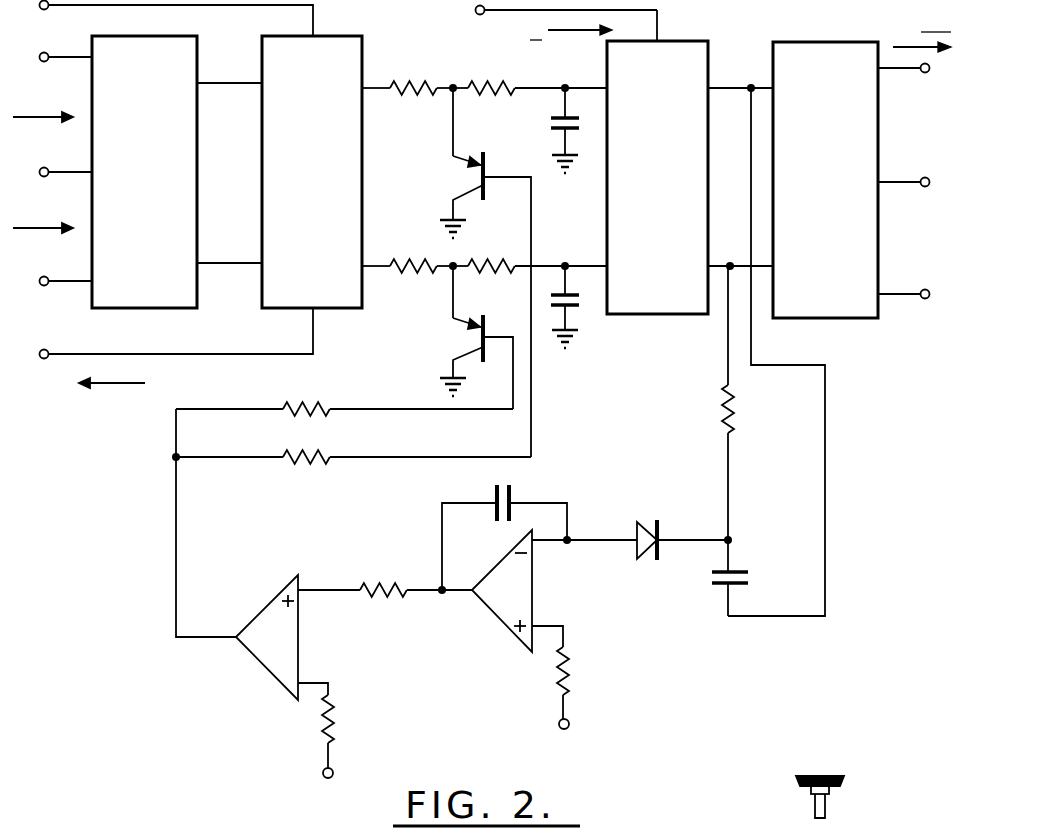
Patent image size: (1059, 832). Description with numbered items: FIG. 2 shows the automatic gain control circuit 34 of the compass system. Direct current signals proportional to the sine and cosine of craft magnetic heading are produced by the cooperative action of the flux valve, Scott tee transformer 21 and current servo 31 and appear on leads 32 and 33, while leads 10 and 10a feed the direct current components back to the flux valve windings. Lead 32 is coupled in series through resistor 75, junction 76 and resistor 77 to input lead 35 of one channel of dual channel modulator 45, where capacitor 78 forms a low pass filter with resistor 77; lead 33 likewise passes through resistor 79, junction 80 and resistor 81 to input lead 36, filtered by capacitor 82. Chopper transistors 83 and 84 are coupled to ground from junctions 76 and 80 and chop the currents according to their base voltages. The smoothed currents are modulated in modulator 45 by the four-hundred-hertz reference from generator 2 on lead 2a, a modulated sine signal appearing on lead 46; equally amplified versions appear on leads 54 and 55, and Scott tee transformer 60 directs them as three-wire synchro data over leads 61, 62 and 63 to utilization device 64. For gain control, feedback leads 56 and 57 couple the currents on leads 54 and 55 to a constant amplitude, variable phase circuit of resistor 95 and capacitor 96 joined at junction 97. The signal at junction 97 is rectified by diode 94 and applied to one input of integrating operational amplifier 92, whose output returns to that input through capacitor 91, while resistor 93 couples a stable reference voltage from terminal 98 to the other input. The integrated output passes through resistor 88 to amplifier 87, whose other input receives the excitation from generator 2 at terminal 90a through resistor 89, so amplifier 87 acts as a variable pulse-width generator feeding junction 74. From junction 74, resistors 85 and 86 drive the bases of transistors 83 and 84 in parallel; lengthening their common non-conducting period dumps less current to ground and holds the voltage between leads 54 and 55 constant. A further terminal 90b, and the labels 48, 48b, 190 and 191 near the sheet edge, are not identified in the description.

The generator 2 is at (512, 32).
The lead 2a is at (660, 28).
The feed back lead 10 is at (218, 354).
The feed back lead 10a is at (201, 9).
The Scott tee transformer 21 is at (155, 308).
The current servo 31 is at (336, 308).
The output lead 32 is at (378, 92).
The output lead 33 is at (378, 264).
The automatic gain control circuit 34 is at (500, 72).
The input lead 35 is at (581, 86).
The input lead 36 is at (580, 264).
The dual channel modulator 45 is at (662, 315).
The lead 54 is at (733, 87).
The lead 55 is at (734, 265).
The feed back lead 56 is at (826, 440).
The feed back lead 57 is at (727, 361).
The Scott tee transformer 60 is at (835, 318).
The output lead 61 is at (925, 73).
The output lead 62 is at (925, 187).
The output lead 63 is at (925, 299).
The utilization device 64 is at (852, 34).
The junction 74 is at (172, 457).
The resistor 75 is at (405, 92).
The junction 76 is at (453, 85).
The resistor 77 is at (493, 93).
The capacitor 78 is at (550, 123).
The resistor 79 is at (406, 272).
The junction 80 is at (451, 270).
The resistor 81 is at (500, 262).
The capacitor 82 is at (585, 307).
The chopper transistor 83 is at (479, 180).
The chopper transistor 84 is at (479, 342).
The resistor 85 is at (336, 405).
The resistor 86 is at (336, 466).
The amplifier 87 is at (266, 605).
The resistor 88 is at (391, 584).
The resistor 89 is at (340, 719).
The terminal 90a is at (334, 775).
The oscillator input terminal 90b is at (475, 10).
The capacitor 91 is at (513, 494).
The integrating operational amplifier 92 is at (489, 619).
The resistor 93 is at (571, 676).
The diode 94 is at (647, 521).
The resistor 95 is at (727, 406).
The capacitor 96 is at (712, 580).
The junction 97 is at (731, 540).
The terminal 98 is at (569, 730).
The lead 46 is at (61, 824).
The element of adjacent figure 48 is at (218, 831).
The element of adjacent figure 48b is at (843, 786).
The element of adjacent figure 190 is at (869, 829).
The element of adjacent figure 191 is at (704, 827).